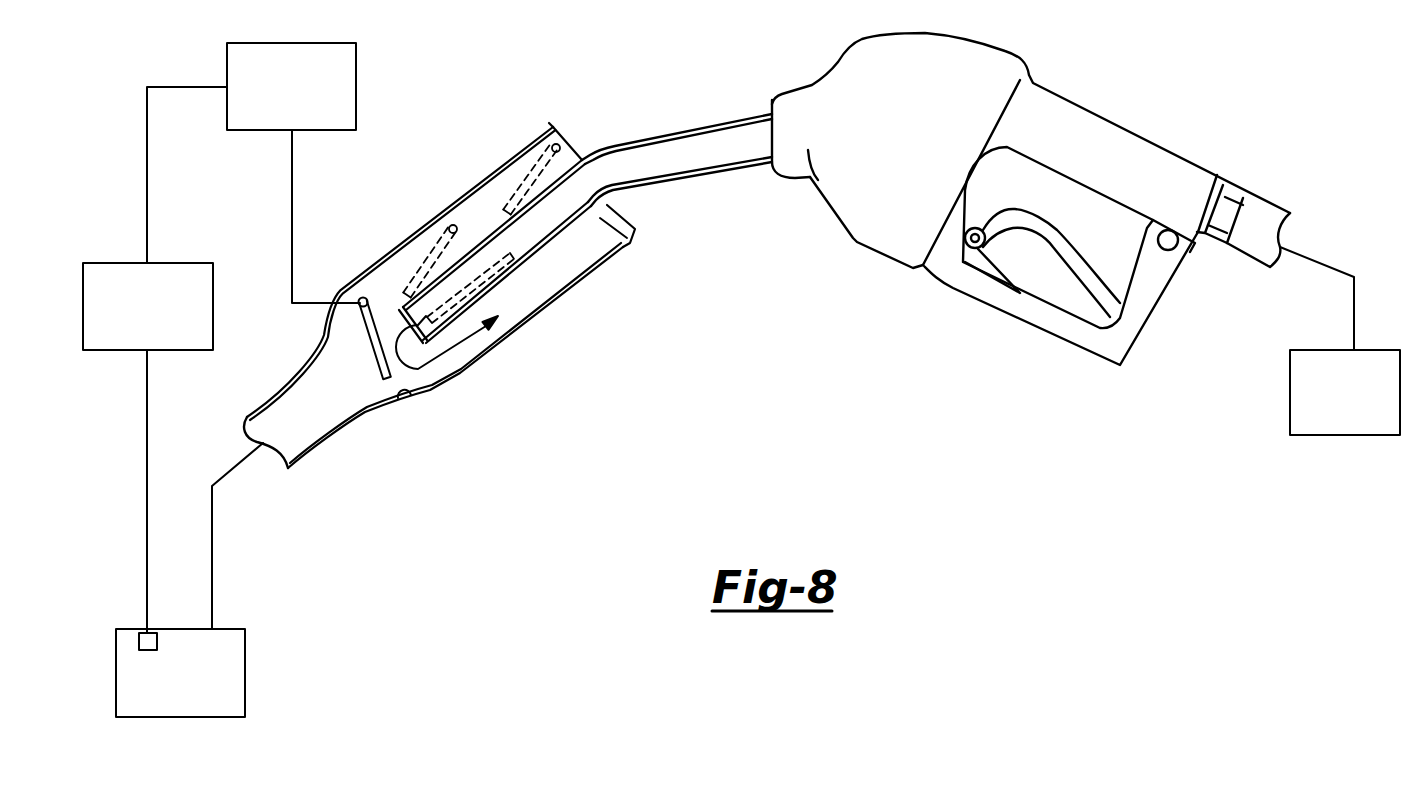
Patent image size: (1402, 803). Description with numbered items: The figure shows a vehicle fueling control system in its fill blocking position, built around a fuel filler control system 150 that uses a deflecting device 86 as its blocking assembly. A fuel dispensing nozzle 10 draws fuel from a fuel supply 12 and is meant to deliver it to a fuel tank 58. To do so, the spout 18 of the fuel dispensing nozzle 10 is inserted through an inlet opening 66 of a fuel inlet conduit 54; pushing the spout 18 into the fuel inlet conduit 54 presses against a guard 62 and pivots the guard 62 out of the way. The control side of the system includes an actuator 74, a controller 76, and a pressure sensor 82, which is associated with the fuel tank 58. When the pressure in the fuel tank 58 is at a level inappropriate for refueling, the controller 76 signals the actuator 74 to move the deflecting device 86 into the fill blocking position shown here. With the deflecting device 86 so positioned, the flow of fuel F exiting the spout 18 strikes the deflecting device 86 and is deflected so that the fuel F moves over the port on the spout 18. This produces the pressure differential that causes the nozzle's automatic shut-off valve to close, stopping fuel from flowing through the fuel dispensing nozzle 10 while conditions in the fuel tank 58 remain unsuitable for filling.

The fuel dispensing nozzle 10 is at (1186, 103).
The fuel supply 12 is at (1290, 393).
The spout 18 is at (557, 240).
The fuel inlet conduit 54 is at (409, 398).
The fuel tank 58 is at (245, 671).
The guard 62 is at (528, 130).
The inlet opening 66 is at (640, 205).
The actuator 74 is at (306, 116).
The controller 76 is at (166, 336).
The pressure sensor 82 is at (129, 624).
The deflecting device 86 is at (373, 360).
The fuel filler control system 150 is at (437, 166).
The flow of fuel F is at (463, 341).